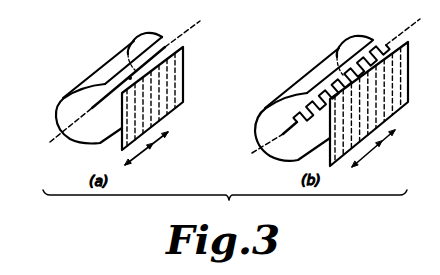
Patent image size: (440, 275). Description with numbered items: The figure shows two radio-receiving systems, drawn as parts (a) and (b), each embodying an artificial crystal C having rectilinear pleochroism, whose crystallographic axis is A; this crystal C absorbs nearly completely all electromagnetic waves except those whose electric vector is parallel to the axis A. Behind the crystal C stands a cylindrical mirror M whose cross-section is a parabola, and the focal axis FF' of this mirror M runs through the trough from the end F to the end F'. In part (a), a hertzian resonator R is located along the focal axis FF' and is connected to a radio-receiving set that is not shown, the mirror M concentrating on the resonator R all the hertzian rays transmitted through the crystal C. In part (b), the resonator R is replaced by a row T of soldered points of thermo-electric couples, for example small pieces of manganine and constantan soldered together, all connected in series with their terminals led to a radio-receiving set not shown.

The cylindrical mirror M is at (148, 33).
The hertzian resonator R is at (103, 101).
The row of soldered points of thermo-electric couples T is at (311, 120).
The focal axis end F is at (160, 137).
The focal axis end F' is at (295, 29).
The artificial crystal C is at (184, 79).
The crystallographic axis A is at (260, 148).